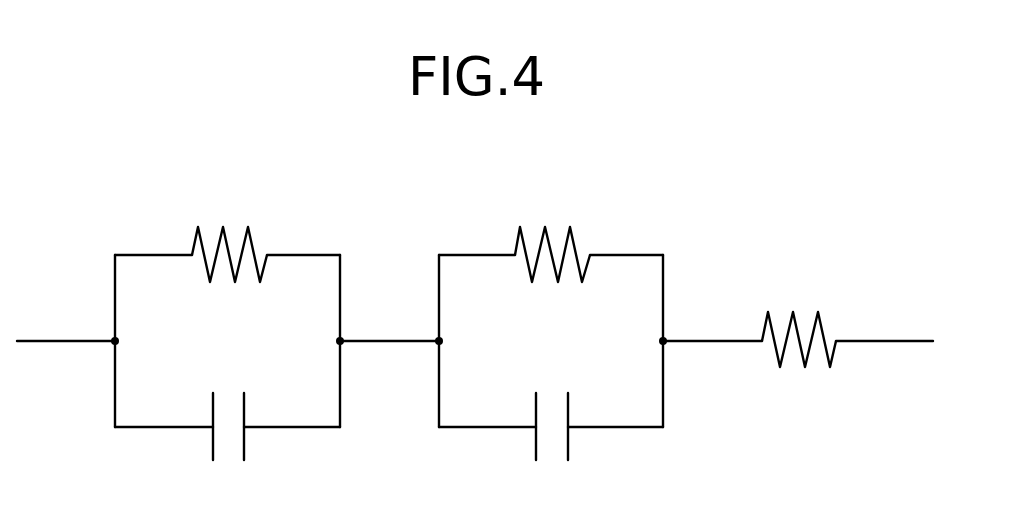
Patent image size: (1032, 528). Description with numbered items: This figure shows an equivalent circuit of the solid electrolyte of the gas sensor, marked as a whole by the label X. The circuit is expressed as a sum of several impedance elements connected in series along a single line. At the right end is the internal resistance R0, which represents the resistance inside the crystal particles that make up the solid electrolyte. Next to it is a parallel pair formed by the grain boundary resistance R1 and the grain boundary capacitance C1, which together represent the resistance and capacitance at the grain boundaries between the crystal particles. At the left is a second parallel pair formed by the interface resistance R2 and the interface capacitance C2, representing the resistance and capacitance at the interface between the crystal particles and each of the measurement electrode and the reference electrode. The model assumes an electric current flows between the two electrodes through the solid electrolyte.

The equivalent circuit (battery model) X is at (475, 286).
The internal resistance R0 is at (799, 323).
The grain boundary resistance R1 is at (552, 236).
The interface resistance R2 is at (229, 236).
The grain boundary capacitance C1 is at (551, 408).
The interface capacitance C2 is at (226, 408).